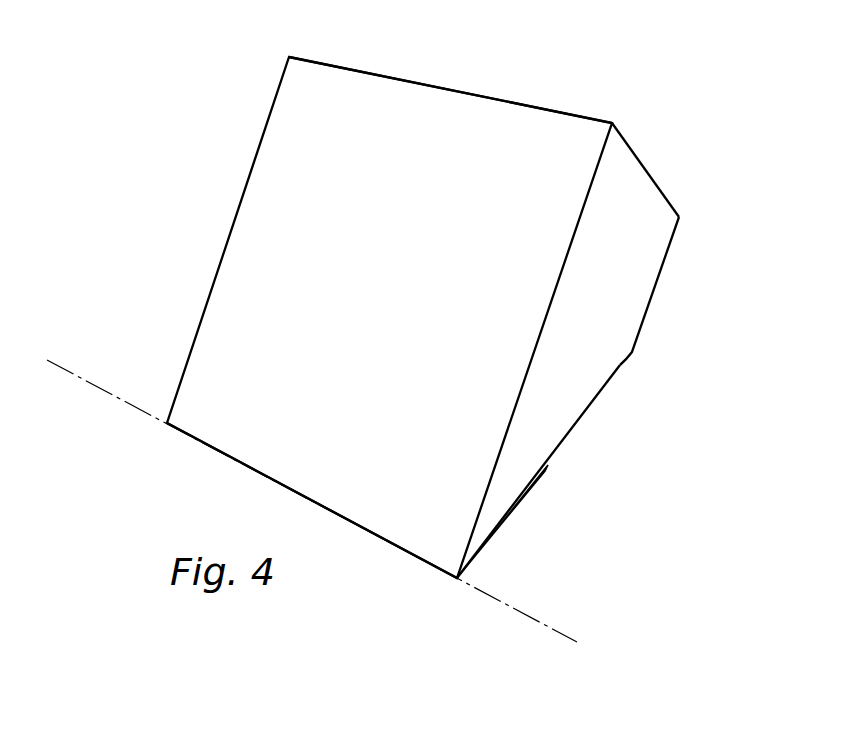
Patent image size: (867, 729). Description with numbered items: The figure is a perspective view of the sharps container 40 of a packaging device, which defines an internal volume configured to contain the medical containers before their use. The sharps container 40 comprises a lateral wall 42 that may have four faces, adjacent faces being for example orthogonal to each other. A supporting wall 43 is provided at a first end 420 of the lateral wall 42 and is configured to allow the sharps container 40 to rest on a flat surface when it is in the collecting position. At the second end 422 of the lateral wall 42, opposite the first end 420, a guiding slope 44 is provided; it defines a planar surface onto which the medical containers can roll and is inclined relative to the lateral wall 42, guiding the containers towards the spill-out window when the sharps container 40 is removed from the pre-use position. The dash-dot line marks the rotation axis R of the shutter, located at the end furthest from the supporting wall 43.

The sharps container 40 is at (401, 109).
The supporting wall 43 is at (535, 103).
The first end 420 is at (657, 182).
The lateral wall 42 is at (657, 282).
The guiding slope 44 is at (583, 415).
The second end 422 is at (448, 548).
The rotation axis R is at (312, 491).